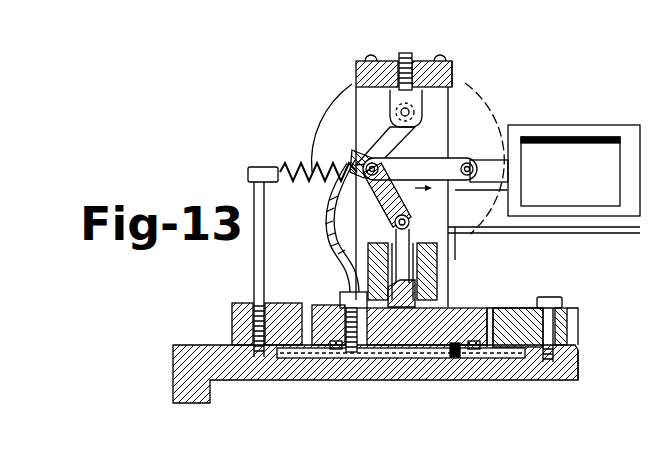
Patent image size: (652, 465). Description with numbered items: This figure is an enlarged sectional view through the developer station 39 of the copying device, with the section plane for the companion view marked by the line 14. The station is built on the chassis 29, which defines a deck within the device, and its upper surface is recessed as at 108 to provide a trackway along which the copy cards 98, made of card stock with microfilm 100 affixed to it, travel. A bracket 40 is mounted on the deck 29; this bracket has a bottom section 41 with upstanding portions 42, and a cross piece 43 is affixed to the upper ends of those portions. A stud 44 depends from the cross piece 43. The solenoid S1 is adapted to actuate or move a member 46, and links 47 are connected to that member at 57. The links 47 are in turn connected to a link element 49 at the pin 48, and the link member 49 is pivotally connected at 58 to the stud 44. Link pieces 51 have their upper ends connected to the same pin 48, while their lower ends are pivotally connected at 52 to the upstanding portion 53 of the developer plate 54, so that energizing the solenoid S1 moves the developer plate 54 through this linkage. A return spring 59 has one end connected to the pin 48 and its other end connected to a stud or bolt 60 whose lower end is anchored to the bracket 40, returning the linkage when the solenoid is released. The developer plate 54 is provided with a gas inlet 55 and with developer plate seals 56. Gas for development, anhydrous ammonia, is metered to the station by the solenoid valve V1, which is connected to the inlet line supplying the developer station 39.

The section line 14- 14 is at (345, 86).
The chassis 29 is at (221, 383).
The developer station 39 is at (515, 378).
The bracket 40 is at (567, 318).
The bottom section 41 is at (569, 332).
The upstanding portions 42 is at (497, 128).
The cross piece 43 is at (447, 69).
The stud 44 is at (412, 60).
The member 46 is at (491, 157).
The links 47 is at (415, 158).
The pin 48 is at (352, 157).
The link element 49 is at (348, 121).
The link pieces 51 is at (438, 206).
The pivotal connection 52 is at (457, 234).
The upstanding portion 53 is at (432, 272).
The developer plate 54 is at (488, 310).
The developer plate gas inlet 55 is at (379, 358).
The developer plate seals 56 is at (333, 378).
The connection 57 is at (480, 169).
The pivotal connection 58 is at (400, 112).
The return spring 59 is at (305, 183).
The stud or bolt 60 is at (252, 238).
The copy cards 98 is at (290, 360).
The microfilm 100 is at (427, 359).
The recess 108 is at (293, 340).
The solenoid S1 is at (578, 138).
The solenoid valve V1 is at (340, 131).